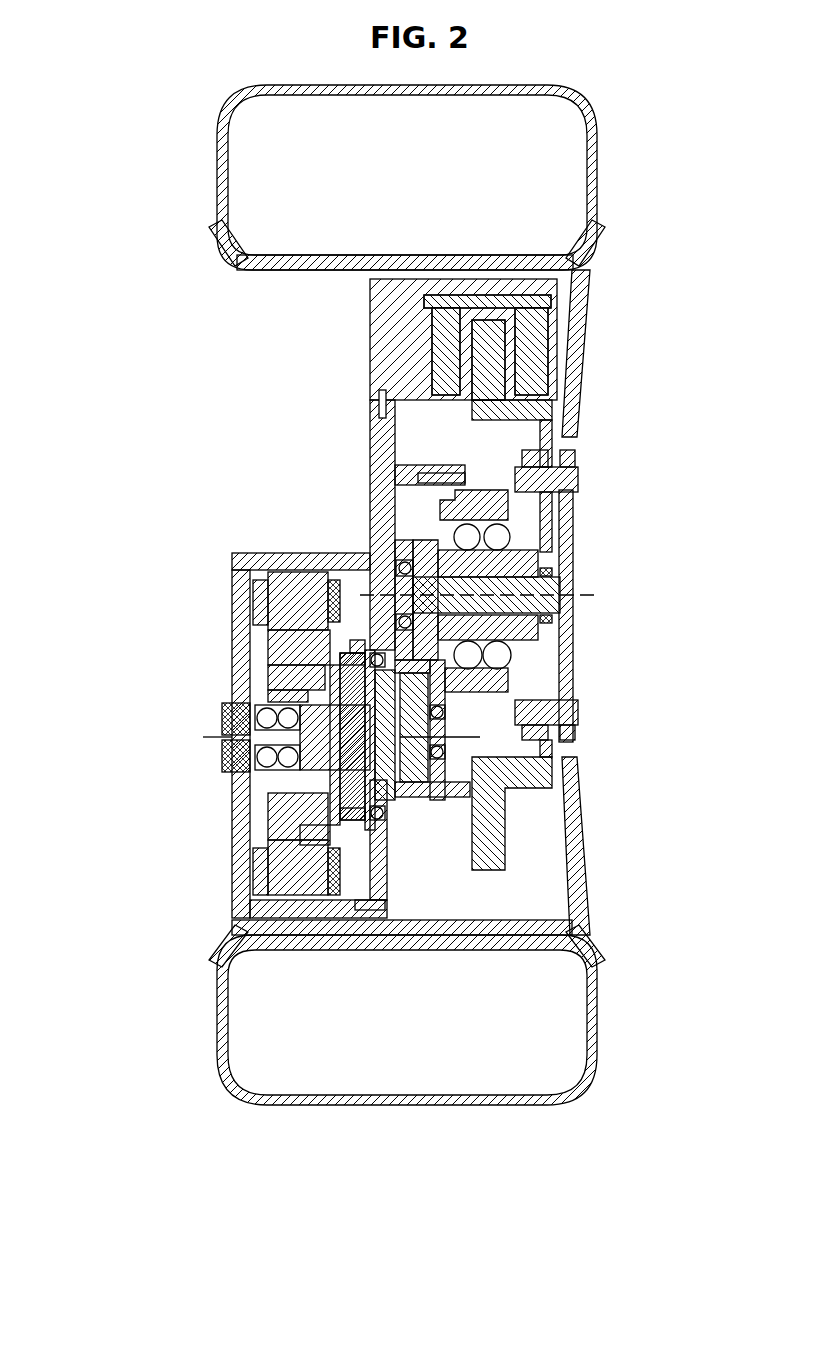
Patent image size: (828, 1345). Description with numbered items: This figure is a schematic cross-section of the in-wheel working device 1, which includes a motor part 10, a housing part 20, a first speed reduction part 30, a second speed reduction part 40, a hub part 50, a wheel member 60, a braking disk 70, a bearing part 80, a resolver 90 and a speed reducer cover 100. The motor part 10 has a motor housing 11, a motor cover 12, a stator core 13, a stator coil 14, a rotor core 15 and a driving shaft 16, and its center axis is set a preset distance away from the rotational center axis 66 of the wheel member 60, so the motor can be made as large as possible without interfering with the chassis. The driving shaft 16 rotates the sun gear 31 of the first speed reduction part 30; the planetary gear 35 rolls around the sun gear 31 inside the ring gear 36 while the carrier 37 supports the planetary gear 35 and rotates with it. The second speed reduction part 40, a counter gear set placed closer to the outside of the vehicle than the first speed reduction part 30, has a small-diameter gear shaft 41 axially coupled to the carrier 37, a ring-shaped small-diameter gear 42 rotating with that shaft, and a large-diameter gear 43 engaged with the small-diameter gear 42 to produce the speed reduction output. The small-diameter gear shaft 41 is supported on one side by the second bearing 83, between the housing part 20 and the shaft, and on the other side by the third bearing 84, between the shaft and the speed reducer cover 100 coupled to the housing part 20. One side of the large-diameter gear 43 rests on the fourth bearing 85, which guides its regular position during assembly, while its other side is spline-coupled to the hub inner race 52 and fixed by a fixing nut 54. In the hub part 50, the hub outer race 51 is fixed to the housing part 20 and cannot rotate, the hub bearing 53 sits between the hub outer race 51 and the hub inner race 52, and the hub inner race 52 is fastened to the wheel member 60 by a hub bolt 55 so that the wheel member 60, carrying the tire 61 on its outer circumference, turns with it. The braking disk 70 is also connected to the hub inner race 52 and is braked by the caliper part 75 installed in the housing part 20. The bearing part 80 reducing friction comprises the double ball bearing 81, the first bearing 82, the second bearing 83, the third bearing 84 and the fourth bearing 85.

The in-wheel working device 1 is at (108, 356).
The motor part 10 is at (223, 568).
The motor housing 11 is at (235, 640).
The motor cover 12 is at (225, 718).
The stator core 13 is at (292, 582).
The stator coil 14 is at (257, 580).
The rotor core 15 is at (320, 825).
The driving shaft 16 is at (330, 800).
The housing part 20 is at (365, 825).
The first speed reduction part 30 is at (400, 880).
The sun gear 31 is at (268, 800).
The planetary gear 35 is at (302, 813).
The ring gear 36 is at (345, 800).
The carrier 37 is at (440, 805).
The second speed reduction part 40 is at (685, 593).
The small-diameter gear shaft 41 is at (480, 690).
The small-diameter gear 42 is at (500, 655).
The large-diameter gear 43 is at (573, 613).
The hub part 50 is at (685, 404).
The hub outer race 51 is at (485, 502).
The hub inner race 52 is at (500, 537).
The hub bearing 53 is at (578, 472).
The fixing nut 54 is at (550, 545).
The hub bolt 55 is at (580, 712).
The wheel member 60 is at (576, 372).
The tire 61 is at (600, 155).
The rotational center axis 66 is at (362, 597).
The braking disk 70 is at (495, 340).
The caliper part 75 is at (385, 333).
The bearing part 80 is at (290, 786).
The double ball bearing 81 is at (310, 700).
The first bearing 82 is at (335, 705).
The second bearing 83 is at (395, 655).
The third bearing 84 is at (460, 785).
The fourth bearing 85 is at (400, 560).
The resolver 90 is at (224, 751).
The speed reducer cover 100 is at (550, 762).